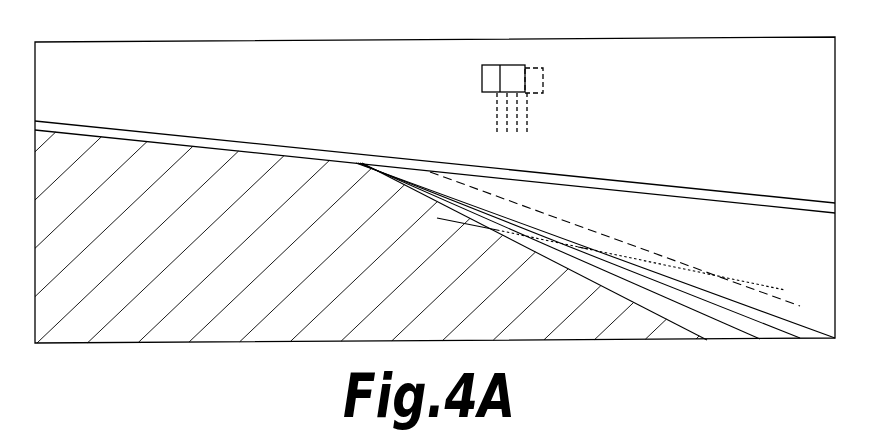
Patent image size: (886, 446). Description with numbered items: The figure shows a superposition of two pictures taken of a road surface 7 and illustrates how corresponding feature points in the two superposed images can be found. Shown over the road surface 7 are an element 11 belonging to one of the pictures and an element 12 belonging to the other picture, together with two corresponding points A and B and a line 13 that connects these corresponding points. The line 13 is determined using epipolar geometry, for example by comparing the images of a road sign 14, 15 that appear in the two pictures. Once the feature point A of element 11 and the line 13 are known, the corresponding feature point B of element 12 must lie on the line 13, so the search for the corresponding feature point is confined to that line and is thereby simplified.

The road surface 7 is at (581, 336).
The element of first picture 11 is at (636, 247).
The element of second picture 12 is at (566, 266).
The line connecting corresponding points 13 is at (730, 278).
The road sign image 14 is at (540, 80).
The road sign image 15 is at (482, 80).
The feature point A is at (585, 245).
The corresponding feature point B is at (492, 232).